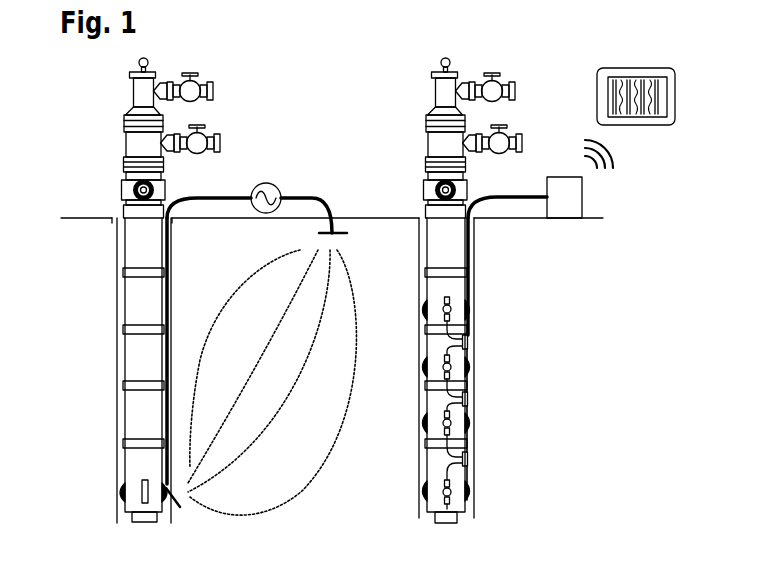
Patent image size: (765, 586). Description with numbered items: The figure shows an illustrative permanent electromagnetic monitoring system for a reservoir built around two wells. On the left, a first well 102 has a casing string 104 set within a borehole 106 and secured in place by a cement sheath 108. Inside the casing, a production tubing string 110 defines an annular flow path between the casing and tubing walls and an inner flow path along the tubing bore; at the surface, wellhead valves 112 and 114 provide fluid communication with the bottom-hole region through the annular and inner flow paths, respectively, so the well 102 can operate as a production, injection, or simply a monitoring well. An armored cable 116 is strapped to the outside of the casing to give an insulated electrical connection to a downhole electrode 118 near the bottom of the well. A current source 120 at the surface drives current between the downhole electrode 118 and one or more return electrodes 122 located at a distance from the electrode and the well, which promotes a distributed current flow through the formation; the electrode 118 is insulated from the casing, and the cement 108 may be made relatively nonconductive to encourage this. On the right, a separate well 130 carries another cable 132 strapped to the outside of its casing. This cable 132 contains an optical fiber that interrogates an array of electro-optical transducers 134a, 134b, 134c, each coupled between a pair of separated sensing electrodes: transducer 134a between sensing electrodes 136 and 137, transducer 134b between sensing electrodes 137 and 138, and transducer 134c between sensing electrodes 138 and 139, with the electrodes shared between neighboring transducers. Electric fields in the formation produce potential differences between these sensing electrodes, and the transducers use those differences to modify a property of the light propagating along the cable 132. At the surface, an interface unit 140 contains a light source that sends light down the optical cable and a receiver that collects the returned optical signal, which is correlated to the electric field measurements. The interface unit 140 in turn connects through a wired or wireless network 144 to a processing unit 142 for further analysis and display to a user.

The first well 102 is at (93, 133).
The casing string 104 is at (115, 508).
The borehole 106 is at (133, 405).
The cement sheath 108 is at (122, 452).
The production tubing string 110 is at (142, 522).
The wellhead valve 112 is at (222, 133).
The wellhead valve 114 is at (215, 87).
The armored cable 116 is at (190, 200).
The downhole electrode 118 is at (173, 493).
The current source 120 is at (259, 182).
The return electrodes 122 is at (338, 230).
The separate well 130 is at (413, 133).
The cable 132 is at (470, 252).
The electro-optical transducer 134a is at (470, 344).
The electro-optical transducer 134b is at (470, 404).
The electro-optical transducer 134c is at (470, 461).
The sensing electrode 136 is at (442, 307).
The sensing electrode 137 is at (442, 365).
The sensing electrode 138 is at (442, 422).
The sensing electrode 139 is at (442, 492).
The interface unit 140 is at (563, 218).
The processing unit 142 is at (598, 88).
The wired or wireless network 144 is at (615, 157).